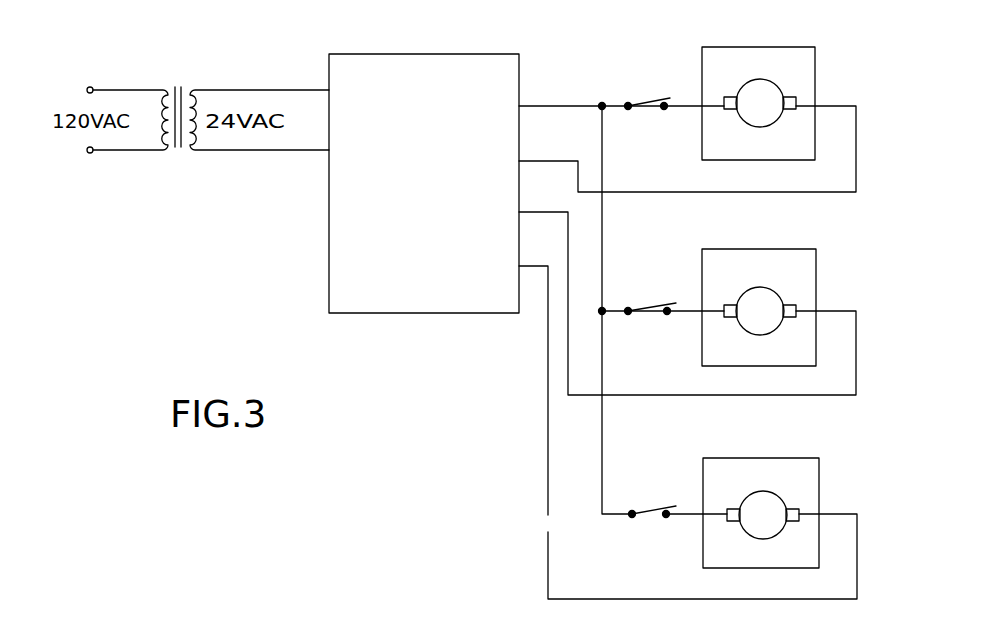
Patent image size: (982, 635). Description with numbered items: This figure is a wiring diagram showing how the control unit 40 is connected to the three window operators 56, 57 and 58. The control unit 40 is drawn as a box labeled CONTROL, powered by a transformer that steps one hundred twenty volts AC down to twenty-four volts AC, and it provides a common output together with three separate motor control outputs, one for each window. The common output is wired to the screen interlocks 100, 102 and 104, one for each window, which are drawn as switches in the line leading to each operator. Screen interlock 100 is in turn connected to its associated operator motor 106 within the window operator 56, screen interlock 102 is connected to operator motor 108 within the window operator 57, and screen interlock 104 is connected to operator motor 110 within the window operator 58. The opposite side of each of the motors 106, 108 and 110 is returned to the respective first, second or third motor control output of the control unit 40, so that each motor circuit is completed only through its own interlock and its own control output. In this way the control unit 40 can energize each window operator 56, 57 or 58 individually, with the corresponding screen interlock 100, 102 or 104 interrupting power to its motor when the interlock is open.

The control unit 40 is at (388, 300).
The window operator 56 is at (803, 103).
The window operator 57 is at (753, 300).
The window operator 58 is at (754, 518).
The screen interlock 100 is at (641, 89).
The screen interlock 102 is at (648, 300).
The screen interlock 104 is at (641, 500).
The operator motor 106 is at (777, 120).
The operator motor 108 is at (737, 324).
The operator motor 110 is at (745, 532).